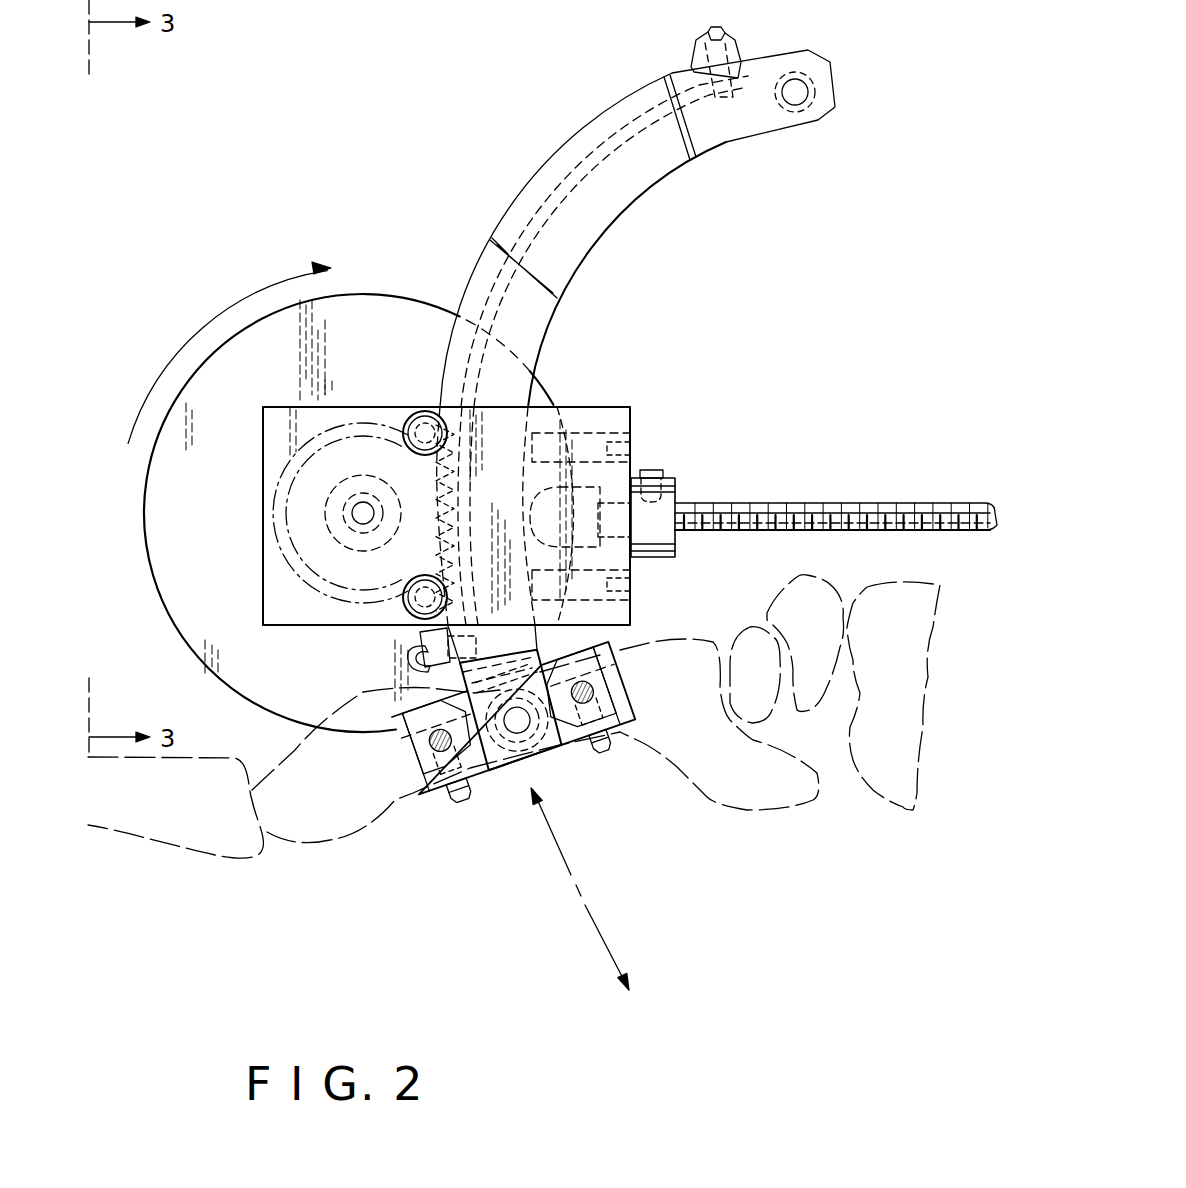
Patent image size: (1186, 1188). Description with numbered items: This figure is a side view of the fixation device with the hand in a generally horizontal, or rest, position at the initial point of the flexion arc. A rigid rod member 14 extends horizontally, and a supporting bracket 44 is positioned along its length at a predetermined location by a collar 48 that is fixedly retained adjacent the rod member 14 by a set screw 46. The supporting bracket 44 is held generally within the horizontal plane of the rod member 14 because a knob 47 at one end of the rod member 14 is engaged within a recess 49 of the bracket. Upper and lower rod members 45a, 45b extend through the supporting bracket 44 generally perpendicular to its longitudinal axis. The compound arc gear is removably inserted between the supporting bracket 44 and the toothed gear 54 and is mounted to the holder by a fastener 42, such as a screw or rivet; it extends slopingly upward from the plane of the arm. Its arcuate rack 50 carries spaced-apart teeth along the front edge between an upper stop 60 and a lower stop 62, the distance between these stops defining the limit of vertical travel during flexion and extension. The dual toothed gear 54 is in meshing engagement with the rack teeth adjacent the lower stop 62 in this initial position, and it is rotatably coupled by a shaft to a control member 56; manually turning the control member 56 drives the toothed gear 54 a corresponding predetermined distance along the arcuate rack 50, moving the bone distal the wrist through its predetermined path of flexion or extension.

The rigid rod member 14 is at (742, 507).
The fastener 42 is at (522, 738).
The supporting bracket 44 is at (608, 407).
The upper rod member 45a is at (420, 412).
The lower rod member 45b is at (412, 612).
The set screw 46 is at (650, 472).
The knob 47 is at (642, 530).
The collar 48 is at (678, 490).
The recess 49 is at (636, 558).
The arcuate rack 50 is at (612, 110).
The toothed gear 54 is at (290, 482).
The control member 56 is at (168, 548).
The upper stop 60 is at (734, 48).
The lower stop 62 is at (408, 662).